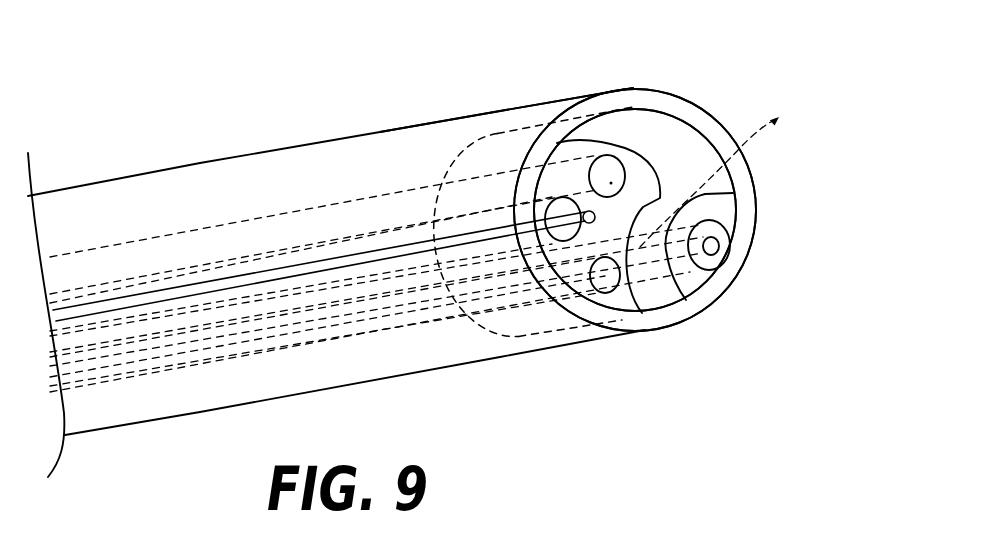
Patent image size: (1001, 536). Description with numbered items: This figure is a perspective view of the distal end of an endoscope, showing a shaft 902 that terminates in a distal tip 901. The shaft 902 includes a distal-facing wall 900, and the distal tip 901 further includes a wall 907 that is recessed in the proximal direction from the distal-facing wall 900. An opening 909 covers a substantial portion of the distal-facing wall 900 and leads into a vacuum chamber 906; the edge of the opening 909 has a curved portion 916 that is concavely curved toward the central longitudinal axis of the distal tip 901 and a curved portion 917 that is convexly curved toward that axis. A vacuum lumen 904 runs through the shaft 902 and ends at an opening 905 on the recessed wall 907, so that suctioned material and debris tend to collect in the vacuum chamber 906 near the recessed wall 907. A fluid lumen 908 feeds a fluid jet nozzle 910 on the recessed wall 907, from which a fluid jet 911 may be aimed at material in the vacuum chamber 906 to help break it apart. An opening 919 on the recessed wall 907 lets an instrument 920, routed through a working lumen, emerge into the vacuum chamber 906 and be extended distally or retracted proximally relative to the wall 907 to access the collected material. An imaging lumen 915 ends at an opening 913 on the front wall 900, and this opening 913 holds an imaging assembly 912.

The distal-facing wall 900 is at (709, 284).
The distal tip 901 is at (498, 88).
The shaft 902 is at (187, 127).
The vacuum lumen 904 is at (611, 183).
The opening 905 is at (624, 158).
The vacuum chamber 906 is at (692, 157).
The wall 907 is at (605, 282).
The fluid lumen 908 is at (449, 316).
The opening 909 is at (629, 108).
The fluid jet nozzle 910 is at (632, 304).
The fluid jet 911 is at (755, 144).
The imaging assembly 912 is at (714, 245).
The opening 913 is at (714, 224).
The imaging lumen 915 is at (718, 256).
The curved portion 916 is at (561, 126).
The curved portion 917 is at (715, 203).
The opening 919 is at (563, 241).
The instrument 920 is at (548, 239).